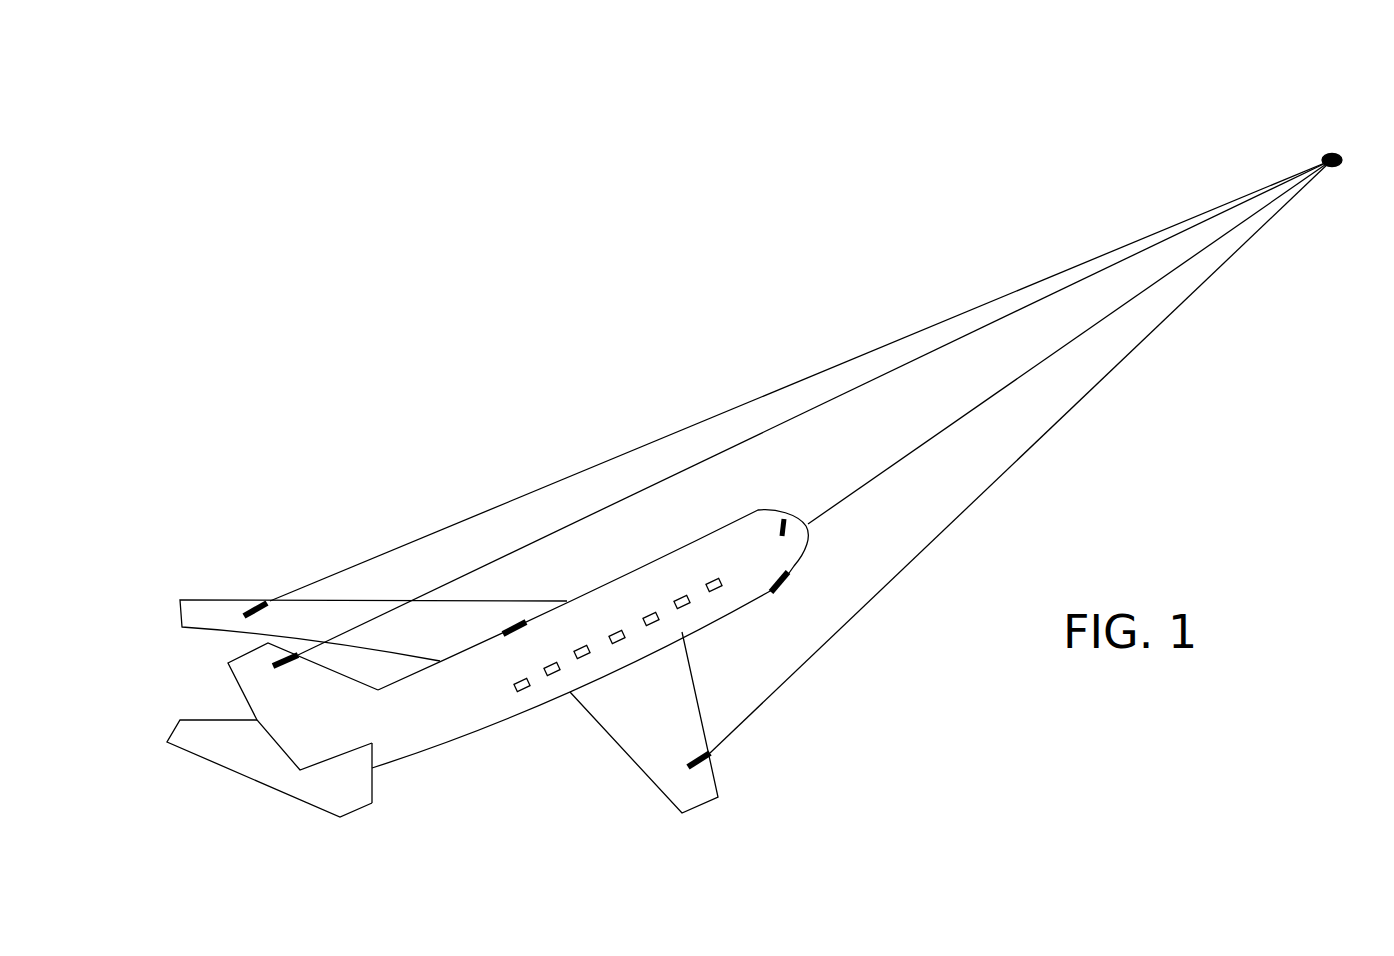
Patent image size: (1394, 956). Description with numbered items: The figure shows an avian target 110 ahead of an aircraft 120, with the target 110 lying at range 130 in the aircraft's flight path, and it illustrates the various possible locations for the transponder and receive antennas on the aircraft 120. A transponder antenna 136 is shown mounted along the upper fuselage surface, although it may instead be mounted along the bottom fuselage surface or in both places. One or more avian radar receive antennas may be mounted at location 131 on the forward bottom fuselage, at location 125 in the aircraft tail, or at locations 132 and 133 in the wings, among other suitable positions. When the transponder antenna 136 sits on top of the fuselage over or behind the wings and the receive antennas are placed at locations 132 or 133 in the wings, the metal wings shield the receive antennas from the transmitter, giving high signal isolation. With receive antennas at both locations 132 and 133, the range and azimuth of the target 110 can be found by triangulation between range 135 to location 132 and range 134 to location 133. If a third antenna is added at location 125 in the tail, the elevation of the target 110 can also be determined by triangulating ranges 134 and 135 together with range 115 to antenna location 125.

The target 110 is at (1337, 152).
The range 115 is at (567, 527).
The aircraft 120 is at (535, 710).
The antenna location 125 is at (282, 665).
The range 130 is at (842, 497).
The location 131 is at (790, 582).
The location 132 is at (710, 767).
The location 133 is at (247, 603).
The range 134 is at (440, 530).
The range 135 is at (807, 663).
The transponder antenna 136 is at (507, 634).